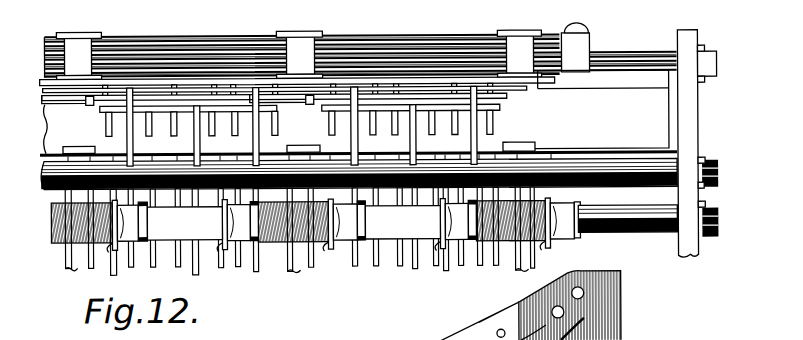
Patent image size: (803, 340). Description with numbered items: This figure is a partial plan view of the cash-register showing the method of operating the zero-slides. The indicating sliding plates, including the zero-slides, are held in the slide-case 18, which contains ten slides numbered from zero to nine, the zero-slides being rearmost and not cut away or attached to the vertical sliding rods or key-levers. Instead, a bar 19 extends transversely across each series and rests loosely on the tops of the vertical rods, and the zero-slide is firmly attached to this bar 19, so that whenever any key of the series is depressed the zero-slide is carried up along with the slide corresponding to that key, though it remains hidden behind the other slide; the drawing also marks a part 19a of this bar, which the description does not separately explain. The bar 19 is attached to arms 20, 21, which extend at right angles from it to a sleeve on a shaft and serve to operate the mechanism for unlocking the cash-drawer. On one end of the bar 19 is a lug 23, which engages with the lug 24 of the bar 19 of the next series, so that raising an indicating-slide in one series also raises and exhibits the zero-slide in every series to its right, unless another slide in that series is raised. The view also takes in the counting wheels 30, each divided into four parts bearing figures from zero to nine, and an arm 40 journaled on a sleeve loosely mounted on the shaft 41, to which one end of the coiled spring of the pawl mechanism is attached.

The slide-case 18 is at (298, 43).
The bar 19 is at (524, 95).
The frame box partition 19a is at (591, 109).
The arm 20 is at (315, 135).
The arm 21 is at (312, 126).
The lug 23 is at (62, 104).
The lug 24 is at (90, 106).
The wheel 30 is at (296, 261).
The arm 40 is at (222, 218).
The shaft 41 is at (663, 145).